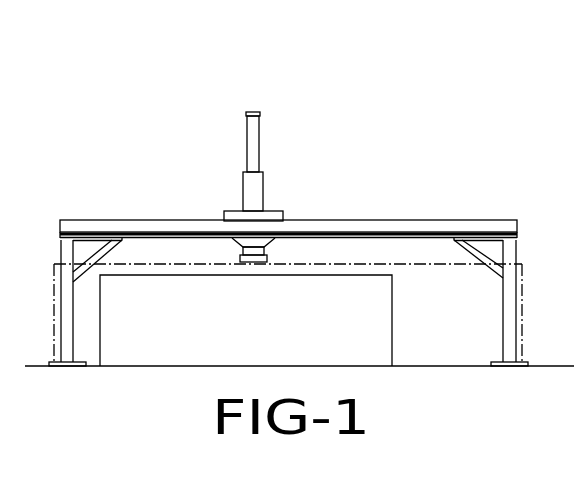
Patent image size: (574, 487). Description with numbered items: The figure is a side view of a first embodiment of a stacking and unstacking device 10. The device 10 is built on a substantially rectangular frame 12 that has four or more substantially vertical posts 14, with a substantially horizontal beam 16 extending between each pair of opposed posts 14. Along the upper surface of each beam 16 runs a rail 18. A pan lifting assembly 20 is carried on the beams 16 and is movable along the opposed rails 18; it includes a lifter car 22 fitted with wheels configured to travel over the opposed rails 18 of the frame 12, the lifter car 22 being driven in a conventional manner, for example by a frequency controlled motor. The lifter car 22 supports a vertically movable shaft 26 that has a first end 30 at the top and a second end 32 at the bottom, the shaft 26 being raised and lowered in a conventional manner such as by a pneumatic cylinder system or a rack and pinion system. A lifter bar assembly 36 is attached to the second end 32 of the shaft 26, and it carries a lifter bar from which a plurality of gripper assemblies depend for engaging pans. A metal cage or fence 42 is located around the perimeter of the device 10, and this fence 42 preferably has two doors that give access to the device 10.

The stacking and unstacking device 10 is at (374, 178).
The frame 12 is at (148, 201).
The posts 14 is at (66, 331).
The beam 16 is at (82, 228).
The rail 18 is at (186, 221).
The pan lifting assembly 20 is at (214, 108).
The lifter car 22 is at (256, 199).
The shaft 26 is at (256, 152).
The first end 30 is at (258, 112).
The second end 32 is at (264, 257).
The lifter bar assembly 36 is at (229, 255).
The fence 42 is at (375, 264).